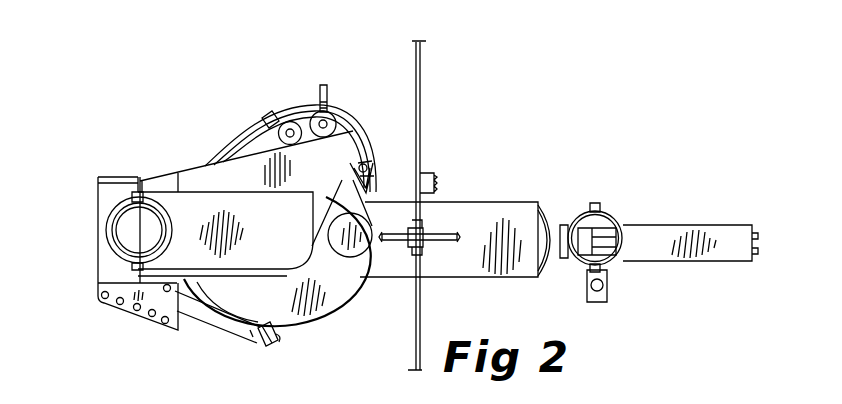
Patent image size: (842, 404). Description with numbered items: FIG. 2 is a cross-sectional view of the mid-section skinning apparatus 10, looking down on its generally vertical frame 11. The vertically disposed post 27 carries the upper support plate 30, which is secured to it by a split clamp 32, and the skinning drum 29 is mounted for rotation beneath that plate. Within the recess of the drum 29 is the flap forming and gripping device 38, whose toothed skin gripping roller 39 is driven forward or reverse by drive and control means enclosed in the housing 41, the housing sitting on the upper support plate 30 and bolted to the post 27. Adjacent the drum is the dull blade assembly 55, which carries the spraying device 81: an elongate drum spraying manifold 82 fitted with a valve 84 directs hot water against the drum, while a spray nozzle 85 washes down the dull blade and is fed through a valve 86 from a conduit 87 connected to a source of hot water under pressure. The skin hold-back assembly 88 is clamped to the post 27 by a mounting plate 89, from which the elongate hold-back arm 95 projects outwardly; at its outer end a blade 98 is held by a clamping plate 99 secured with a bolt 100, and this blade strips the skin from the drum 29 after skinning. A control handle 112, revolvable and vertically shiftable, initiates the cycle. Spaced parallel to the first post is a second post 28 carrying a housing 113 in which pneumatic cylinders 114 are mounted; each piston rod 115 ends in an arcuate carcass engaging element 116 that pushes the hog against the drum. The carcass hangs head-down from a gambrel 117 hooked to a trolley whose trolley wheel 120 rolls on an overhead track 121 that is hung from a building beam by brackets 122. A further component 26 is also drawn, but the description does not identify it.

The mid-section skinning apparatus 10 is at (563, 86).
The frame 11 is at (607, 206).
The hydraulic cylinder 26 is at (509, 262).
The post 27 is at (106, 220).
The post 28 is at (618, 214).
The skinning drum 29 is at (328, 315).
The upper support plate 30 is at (187, 172).
The split clamp 32 is at (98, 247).
The flap forming and gripping device 38 is at (377, 248).
The toothed skin gripping roller 39 is at (346, 258).
The housing 41 is at (273, 252).
The dull blade assembly 55 is at (348, 175).
The spraying device 81 is at (334, 120).
The drum spraying manifold 82 is at (322, 86).
The valve 84 is at (378, 186).
The spray nozzle 85 is at (364, 128).
The valve 86 is at (291, 121).
The conduit 87 is at (260, 113).
The skin hold-back assembly 88 is at (190, 335).
The mounting plate 89 is at (104, 304).
The hold-back arm 95 is at (233, 347).
The blade 98 is at (253, 340).
The clamping plate 99 is at (273, 347).
The bolt 100 is at (276, 338).
The control handle 112 is at (596, 294).
The housing 113 is at (713, 226).
The pneumatic cylinders 114 is at (610, 247).
The piston rod 115 is at (557, 275).
The carcass engaging element 116 is at (558, 205).
The gambrel 117 is at (428, 248).
The trolley wheel 120 is at (438, 207).
The overhead track 121 is at (421, 57).
The brackets 122 is at (439, 181).